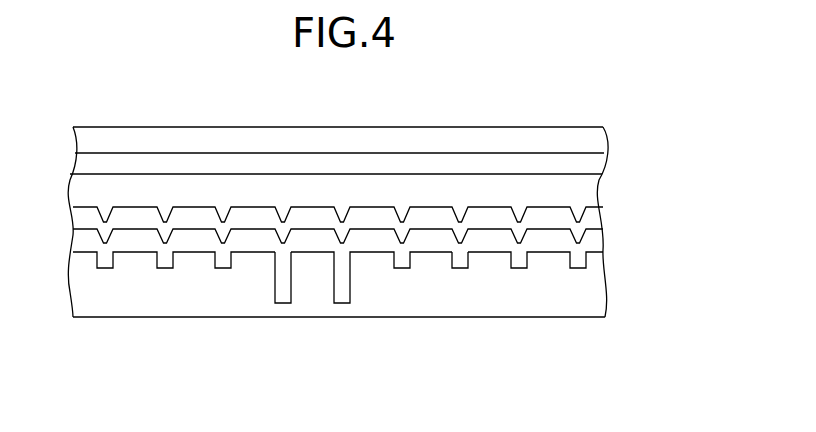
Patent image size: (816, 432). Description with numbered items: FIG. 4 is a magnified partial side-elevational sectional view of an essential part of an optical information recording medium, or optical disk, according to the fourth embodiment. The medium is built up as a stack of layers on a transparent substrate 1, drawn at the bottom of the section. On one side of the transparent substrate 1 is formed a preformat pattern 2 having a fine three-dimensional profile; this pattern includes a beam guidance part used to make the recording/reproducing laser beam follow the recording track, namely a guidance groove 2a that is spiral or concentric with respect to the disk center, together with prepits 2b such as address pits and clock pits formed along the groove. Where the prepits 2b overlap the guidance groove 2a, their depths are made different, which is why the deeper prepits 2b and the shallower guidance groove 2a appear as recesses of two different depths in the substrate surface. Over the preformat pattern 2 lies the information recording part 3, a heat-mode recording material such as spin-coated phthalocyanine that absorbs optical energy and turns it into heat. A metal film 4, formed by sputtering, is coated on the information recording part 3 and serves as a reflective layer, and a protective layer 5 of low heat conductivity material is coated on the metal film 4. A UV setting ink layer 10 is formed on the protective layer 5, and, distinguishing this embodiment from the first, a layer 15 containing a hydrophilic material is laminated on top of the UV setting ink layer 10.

The transparent substrate 1 is at (597, 310).
The preformat pattern 2 is at (604, 280).
The guidance groove 2a is at (462, 268).
The prepits 2b is at (283, 303).
The information recording part 3 is at (600, 240).
The metal film 4 is at (593, 218).
The protective layer 5 is at (596, 191).
The UV setting ink layer 10 is at (600, 165).
The layer containing a hydrophilic material 15 is at (599, 137).